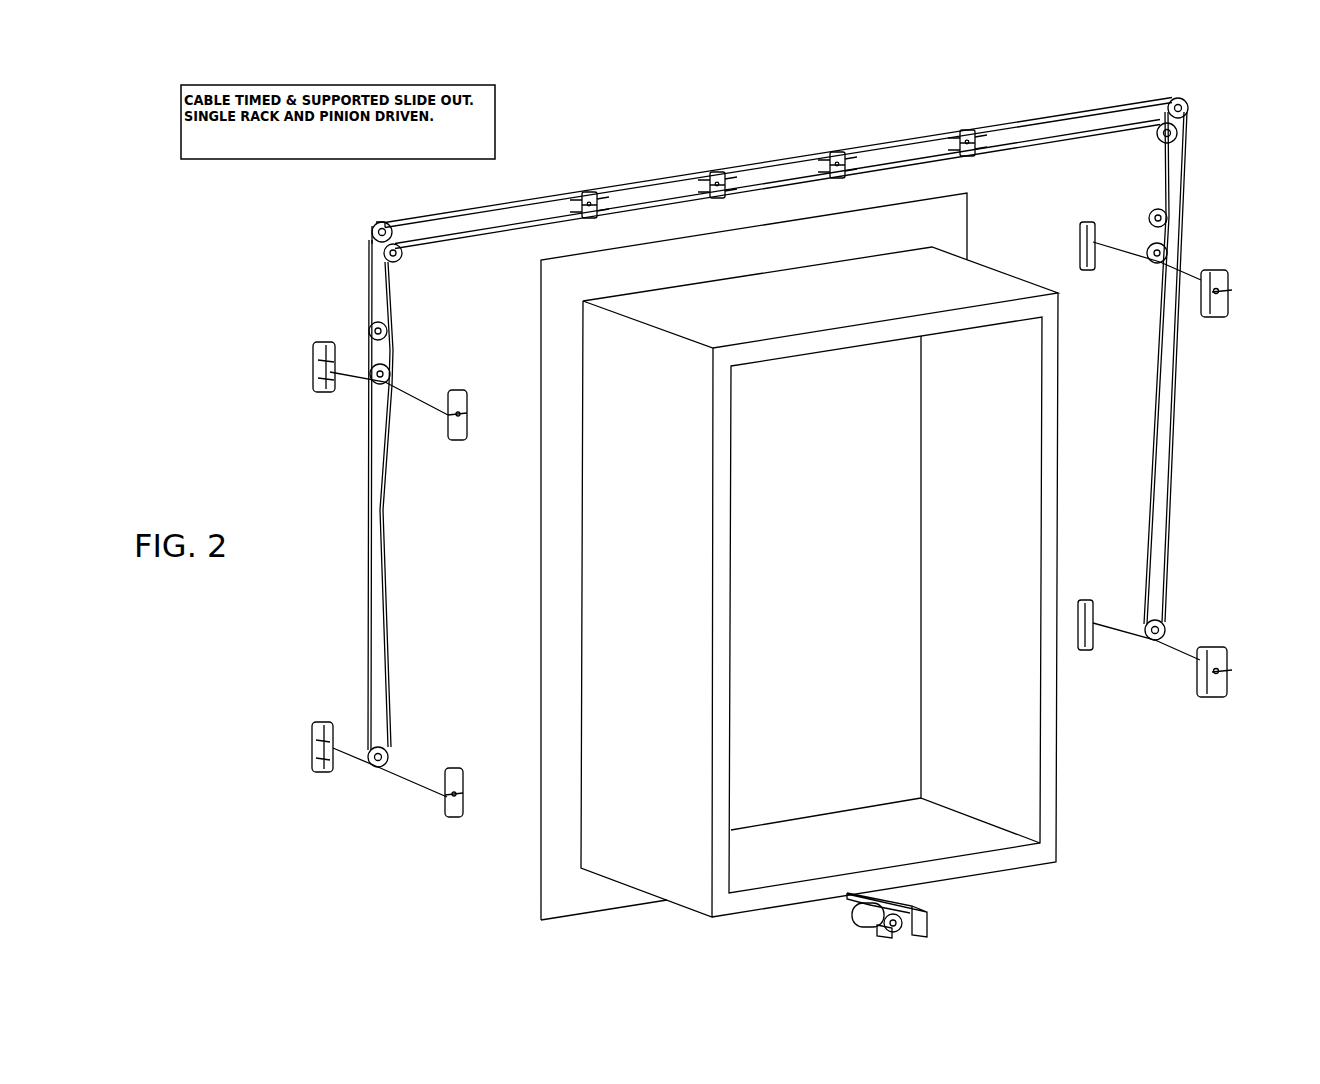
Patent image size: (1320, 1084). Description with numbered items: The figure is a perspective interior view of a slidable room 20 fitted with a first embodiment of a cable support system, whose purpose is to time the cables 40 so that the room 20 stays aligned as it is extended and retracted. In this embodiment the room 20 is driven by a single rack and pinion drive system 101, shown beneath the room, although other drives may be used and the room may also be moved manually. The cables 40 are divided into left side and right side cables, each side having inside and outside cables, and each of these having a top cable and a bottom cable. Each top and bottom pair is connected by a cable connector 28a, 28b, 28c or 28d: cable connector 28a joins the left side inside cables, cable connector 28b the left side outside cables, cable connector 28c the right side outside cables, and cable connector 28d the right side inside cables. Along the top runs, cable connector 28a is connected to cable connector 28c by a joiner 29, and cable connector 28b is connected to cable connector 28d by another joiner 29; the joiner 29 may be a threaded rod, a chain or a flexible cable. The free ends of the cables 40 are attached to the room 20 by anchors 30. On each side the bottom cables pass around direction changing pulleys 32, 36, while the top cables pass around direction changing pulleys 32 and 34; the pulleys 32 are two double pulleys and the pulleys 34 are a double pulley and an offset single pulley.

The slidable room 20 is at (1048, 710).
The cable connector 28a is at (590, 192).
The cable connector 28b is at (724, 172).
The cable connector 28c is at (845, 158).
The cable connector 28d is at (978, 136).
The joiner 29 is at (690, 192).
The anchor 30 is at (312, 392).
The direction changing pulley 32 is at (375, 226).
The direction changing pulley 34 is at (390, 372).
The direction changing pulley 36 is at (388, 757).
The cable 40 is at (487, 206).
The rack and pinion drive system 101 is at (920, 910).